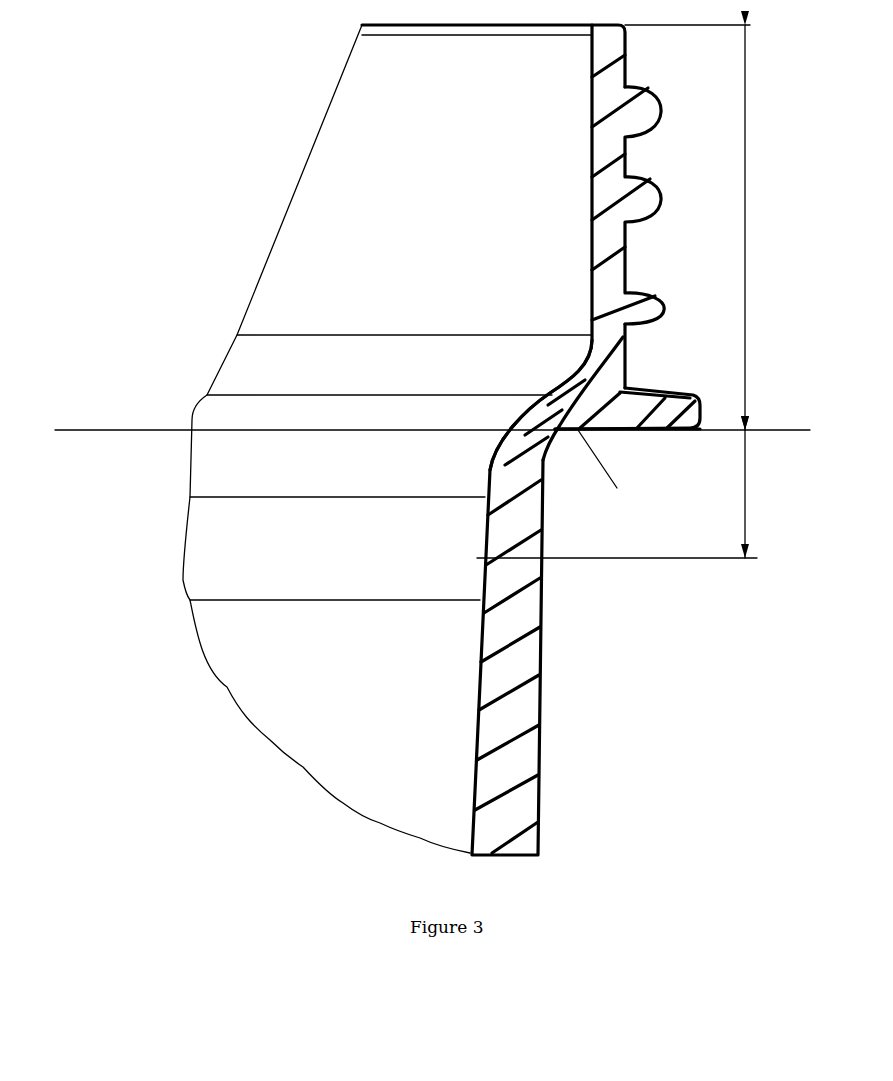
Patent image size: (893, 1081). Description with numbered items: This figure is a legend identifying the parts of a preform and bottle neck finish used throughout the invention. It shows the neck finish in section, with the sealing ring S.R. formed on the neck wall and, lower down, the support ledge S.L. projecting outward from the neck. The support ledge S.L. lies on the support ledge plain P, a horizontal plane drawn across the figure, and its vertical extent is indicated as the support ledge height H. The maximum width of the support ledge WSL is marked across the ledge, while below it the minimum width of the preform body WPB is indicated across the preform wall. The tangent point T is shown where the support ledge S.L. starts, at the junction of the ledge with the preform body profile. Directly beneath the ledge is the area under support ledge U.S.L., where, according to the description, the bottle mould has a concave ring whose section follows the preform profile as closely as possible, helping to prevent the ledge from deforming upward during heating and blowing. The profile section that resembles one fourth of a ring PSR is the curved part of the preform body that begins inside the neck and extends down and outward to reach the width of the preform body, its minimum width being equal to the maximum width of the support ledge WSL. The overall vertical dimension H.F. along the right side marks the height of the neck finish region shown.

The sealing ring S.R. is at (633, 310).
The maximum width of the support ledge WSL is at (557, 392).
The profile section that resembles one fourth of a ring PSR is at (502, 413).
The support ledge S.L. is at (633, 410).
The minimum width of the preform body WPB is at (585, 458).
The tangent point T is at (598, 432).
The support ledge height H is at (700, 388).
The support ledge plain P is at (140, 432).
The height of finish H.F. is at (687, 227).
The area under support ledge U.S.L. is at (740, 494).